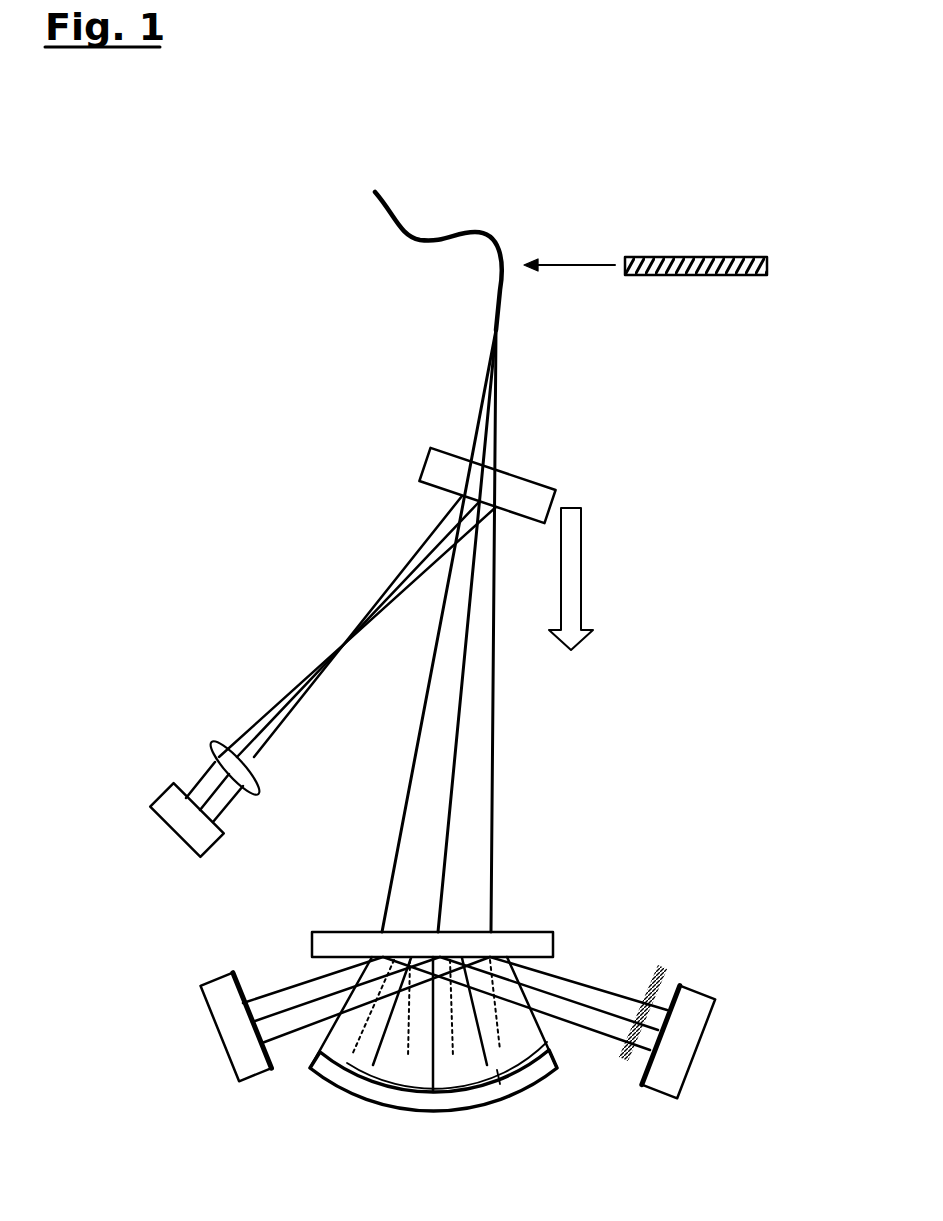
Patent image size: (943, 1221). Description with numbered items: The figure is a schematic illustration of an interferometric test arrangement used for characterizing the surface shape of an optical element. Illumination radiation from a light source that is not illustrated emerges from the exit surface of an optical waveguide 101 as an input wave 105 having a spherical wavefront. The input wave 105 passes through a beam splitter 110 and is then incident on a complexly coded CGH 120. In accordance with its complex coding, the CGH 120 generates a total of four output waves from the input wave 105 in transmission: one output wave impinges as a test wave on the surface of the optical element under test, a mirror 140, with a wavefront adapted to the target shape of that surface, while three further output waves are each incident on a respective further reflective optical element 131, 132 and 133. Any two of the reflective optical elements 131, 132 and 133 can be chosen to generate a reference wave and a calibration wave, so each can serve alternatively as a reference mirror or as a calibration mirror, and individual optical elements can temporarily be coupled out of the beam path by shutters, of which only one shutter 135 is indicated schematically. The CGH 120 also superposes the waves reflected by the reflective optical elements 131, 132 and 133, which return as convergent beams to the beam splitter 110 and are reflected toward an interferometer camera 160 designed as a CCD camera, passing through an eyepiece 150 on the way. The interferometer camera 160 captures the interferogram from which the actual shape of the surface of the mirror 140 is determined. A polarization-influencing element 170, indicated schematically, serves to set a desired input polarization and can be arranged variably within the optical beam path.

The optical waveguide 101 is at (466, 231).
The polarization-influencing element 170 is at (723, 256).
The input wave 105 is at (511, 400).
The beam splitter 110 is at (527, 497).
The eyepiece 150 is at (250, 777).
The interferometer camera 160 is at (180, 813).
The complexly coded CGH 120 is at (548, 942).
The reflective optical element 131 is at (222, 1018).
The reflective optical element 132 is at (688, 1050).
The shutter 135 is at (660, 968).
The reflective optical element 133 is at (555, 1030).
The mirror 140 is at (470, 1098).